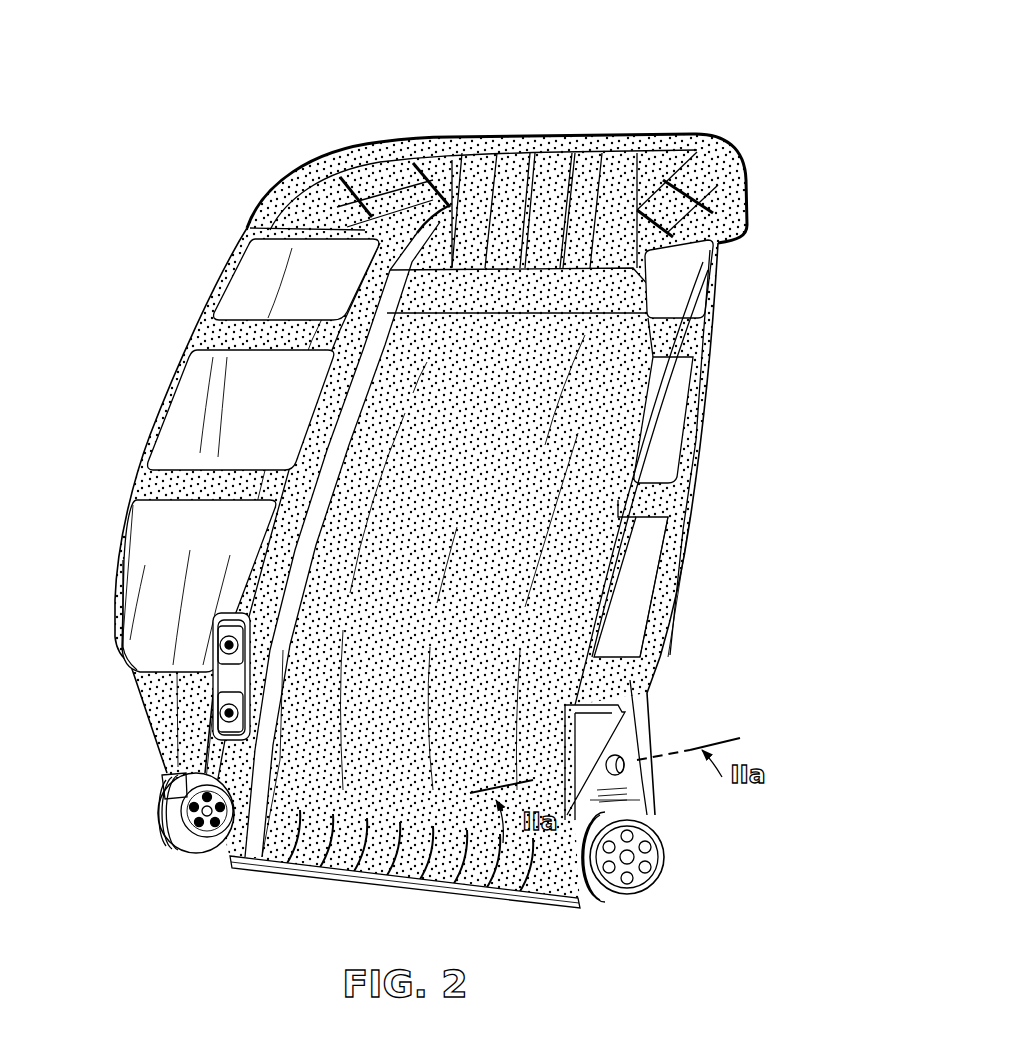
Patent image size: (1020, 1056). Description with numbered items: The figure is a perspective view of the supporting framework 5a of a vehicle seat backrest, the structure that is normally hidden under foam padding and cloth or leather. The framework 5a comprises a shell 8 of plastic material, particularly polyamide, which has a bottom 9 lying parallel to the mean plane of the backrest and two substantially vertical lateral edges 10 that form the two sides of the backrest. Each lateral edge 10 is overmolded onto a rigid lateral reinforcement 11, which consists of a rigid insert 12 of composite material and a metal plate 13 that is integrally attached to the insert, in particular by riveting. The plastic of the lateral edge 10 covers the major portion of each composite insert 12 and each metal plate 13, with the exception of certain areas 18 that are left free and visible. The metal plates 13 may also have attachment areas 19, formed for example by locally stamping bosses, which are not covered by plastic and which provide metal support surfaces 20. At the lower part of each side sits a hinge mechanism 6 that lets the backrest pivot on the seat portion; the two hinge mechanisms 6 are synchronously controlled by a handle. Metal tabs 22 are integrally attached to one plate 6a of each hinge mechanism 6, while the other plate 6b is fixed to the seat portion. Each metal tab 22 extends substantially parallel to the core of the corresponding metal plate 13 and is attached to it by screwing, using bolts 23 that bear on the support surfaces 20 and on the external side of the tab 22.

The supporting framework 5a is at (748, 115).
The shell 8 is at (532, 124).
The bottom 9 is at (397, 762).
The lateral edge 10 is at (156, 487).
The rigid lateral reinforcement 11 is at (130, 415).
The rigid insert 12 is at (676, 424).
The metal plate 13 is at (657, 691).
The areas left free 18 is at (172, 523).
The attachment area 19 is at (242, 645).
The metal support surface 20 is at (237, 698).
The metal tab 22 is at (172, 800).
The bolt 23 is at (218, 716).
The hinge mechanism 6 is at (158, 832).
The plate of the hinge mechanism 6a is at (212, 834).
The plate of the hinge mechanism 6b is at (176, 846).